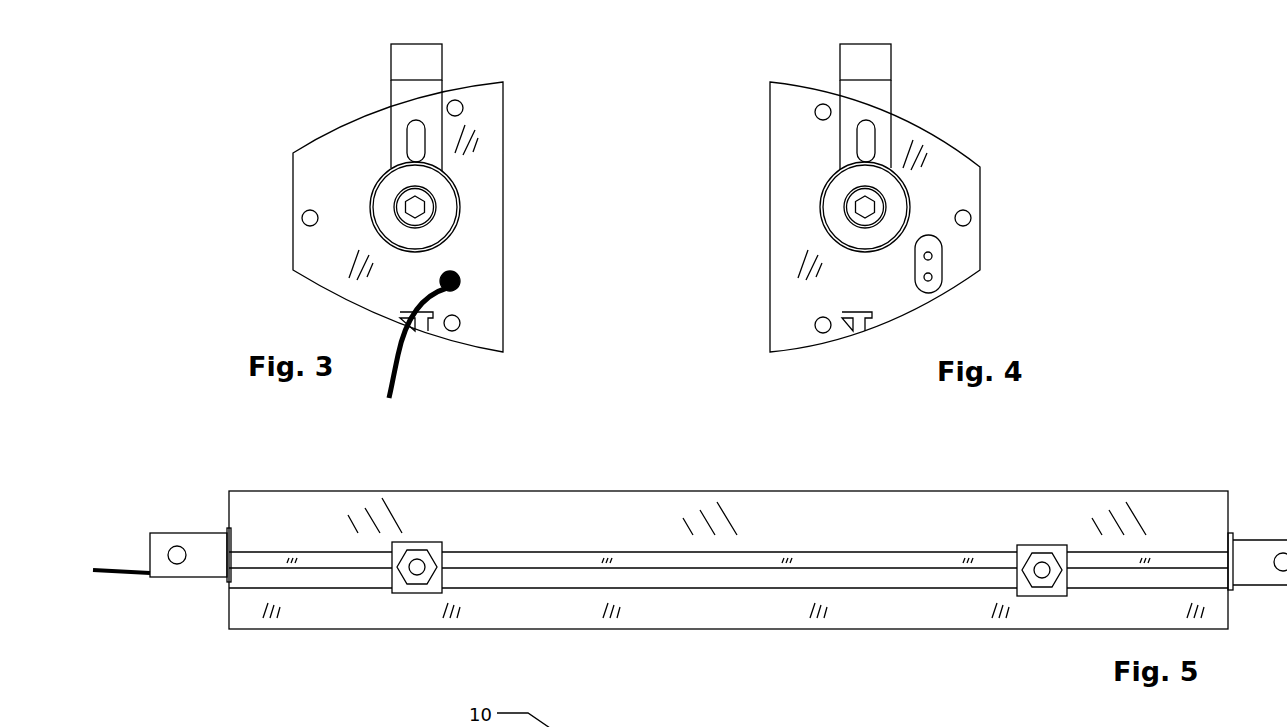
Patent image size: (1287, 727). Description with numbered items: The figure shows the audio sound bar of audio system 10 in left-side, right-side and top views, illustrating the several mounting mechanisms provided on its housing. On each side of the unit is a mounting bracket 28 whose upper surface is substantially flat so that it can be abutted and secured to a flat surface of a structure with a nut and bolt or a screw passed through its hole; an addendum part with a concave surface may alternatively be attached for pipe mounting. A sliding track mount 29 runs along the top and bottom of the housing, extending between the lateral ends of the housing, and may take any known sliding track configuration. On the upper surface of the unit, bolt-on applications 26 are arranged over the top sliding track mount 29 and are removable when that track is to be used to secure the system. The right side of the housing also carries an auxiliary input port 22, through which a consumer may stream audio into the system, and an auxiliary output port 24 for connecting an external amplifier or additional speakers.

In FIG. 3, the audio system 10 is at (280, 93).
In FIG. 4, the audio system 10 is at (1010, 85).
In FIG. 5, the audio system 10 is at (1077, 475).
In FIG. 4, the auxiliary input port 22 is at (932, 258).
In FIG. 4, the auxiliary output port 24 is at (930, 281).
In FIG. 5, the bolt-on application 26 is at (420, 565).
In FIG. 3, the mounting bracket 28 is at (381, 75).
In FIG. 4, the mounting bracket 28 is at (910, 77).
In FIG. 5, the mounting bracket 28 is at (170, 523).
In FIG. 3, the sliding track mount 29 is at (418, 331).
In FIG. 4, the sliding track mount 29 is at (858, 331).
In FIG. 5, the sliding track mount 29 is at (1187, 583).